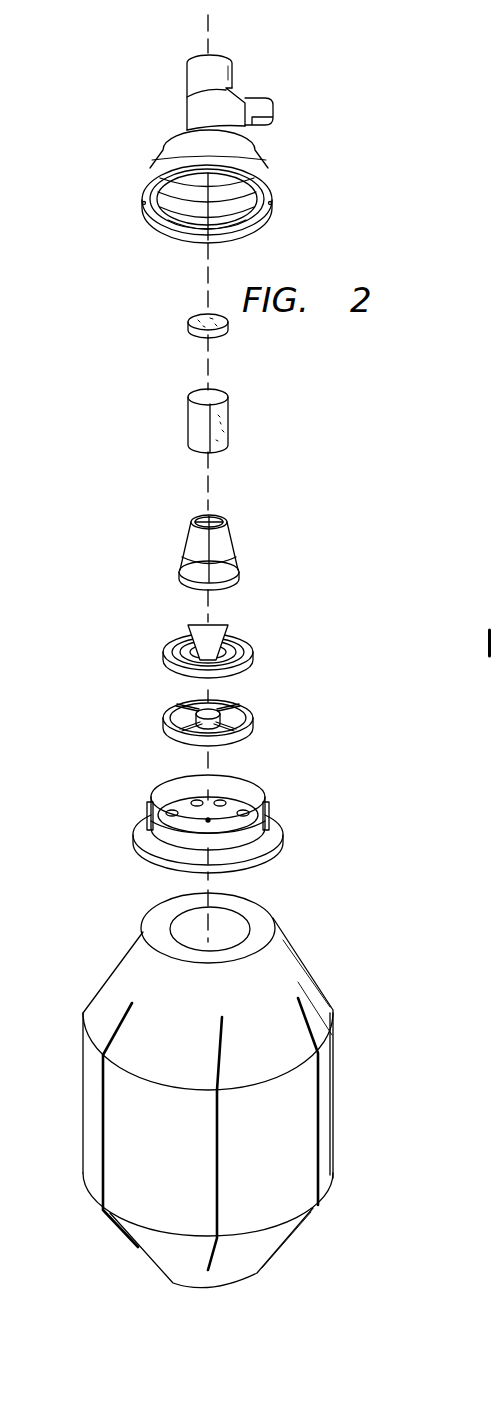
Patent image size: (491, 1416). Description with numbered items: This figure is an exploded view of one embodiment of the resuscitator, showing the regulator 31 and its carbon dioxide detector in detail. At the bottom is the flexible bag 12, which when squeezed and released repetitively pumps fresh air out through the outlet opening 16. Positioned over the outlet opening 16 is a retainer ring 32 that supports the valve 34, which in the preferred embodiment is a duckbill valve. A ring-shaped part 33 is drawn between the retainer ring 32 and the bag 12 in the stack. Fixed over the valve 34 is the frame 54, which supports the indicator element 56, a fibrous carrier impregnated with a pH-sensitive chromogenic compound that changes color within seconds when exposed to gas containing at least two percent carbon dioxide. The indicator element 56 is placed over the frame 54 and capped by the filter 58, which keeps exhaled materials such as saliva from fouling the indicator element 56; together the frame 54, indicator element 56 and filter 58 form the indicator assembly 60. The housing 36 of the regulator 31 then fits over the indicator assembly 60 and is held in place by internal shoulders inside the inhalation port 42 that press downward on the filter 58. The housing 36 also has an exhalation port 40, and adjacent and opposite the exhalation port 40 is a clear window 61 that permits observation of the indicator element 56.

The flexible bag 12 is at (195, 1085).
The outlet opening 16 is at (176, 930).
The regulator 31 is at (262, 134).
The retainer ring 32 is at (162, 724).
The perforated cup insert 33 is at (133, 838).
The valve 34 is at (162, 651).
The housing 36 is at (265, 175).
The exhalation port 40 is at (280, 104).
The inhalation port 42 is at (220, 56).
The frame 54 is at (188, 552).
The indicator element 56 is at (189, 423).
The filter 58 is at (190, 327).
The indicator assembly 60 is at (163, 452).
The clear window 61 is at (185, 115).